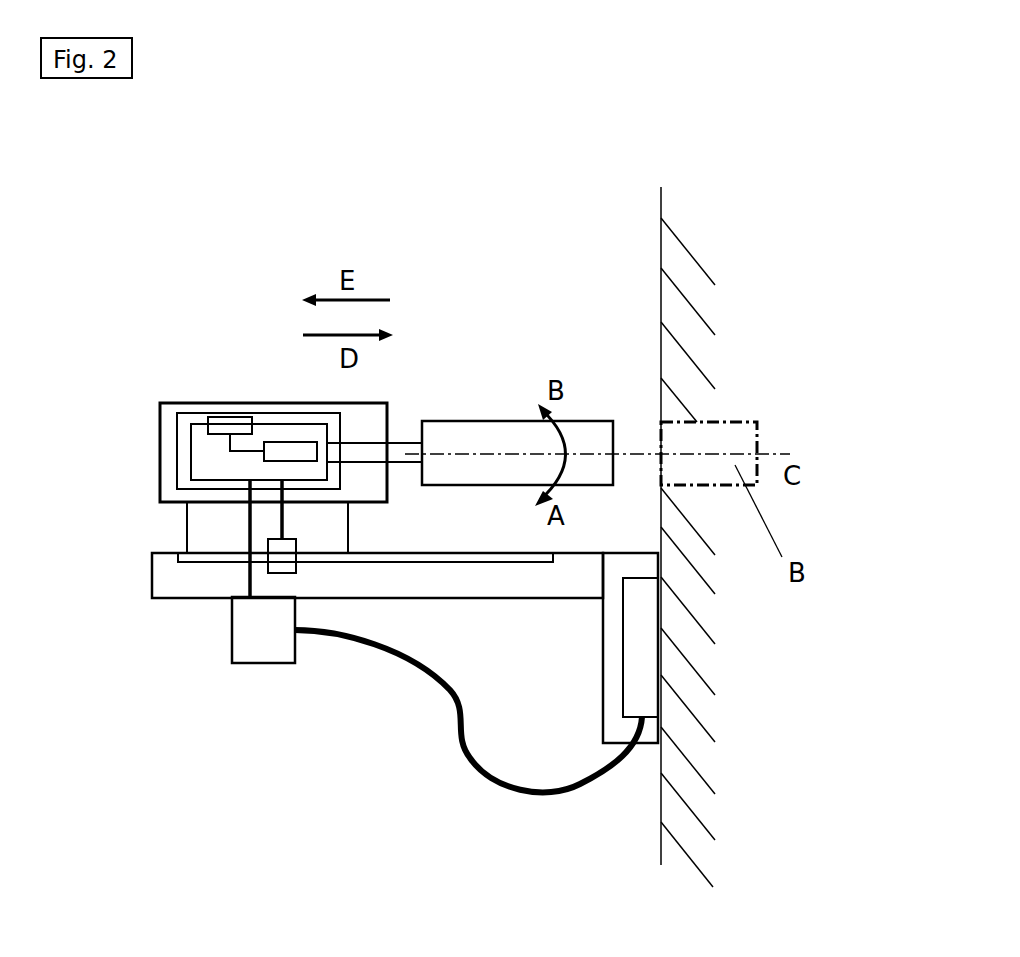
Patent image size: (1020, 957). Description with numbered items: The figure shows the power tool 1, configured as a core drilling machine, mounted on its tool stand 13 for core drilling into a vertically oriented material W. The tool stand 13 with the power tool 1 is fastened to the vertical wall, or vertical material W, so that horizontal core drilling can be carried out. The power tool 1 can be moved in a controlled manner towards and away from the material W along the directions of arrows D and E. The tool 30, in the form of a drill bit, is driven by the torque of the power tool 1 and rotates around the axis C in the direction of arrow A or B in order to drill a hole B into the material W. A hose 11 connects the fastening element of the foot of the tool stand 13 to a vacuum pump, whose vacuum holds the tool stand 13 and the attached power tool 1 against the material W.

The power tool 1 is at (168, 402).
The hose 11 is at (475, 760).
The tool stand 13 is at (188, 585).
The tool 30 is at (462, 432).
The material W is at (696, 537).